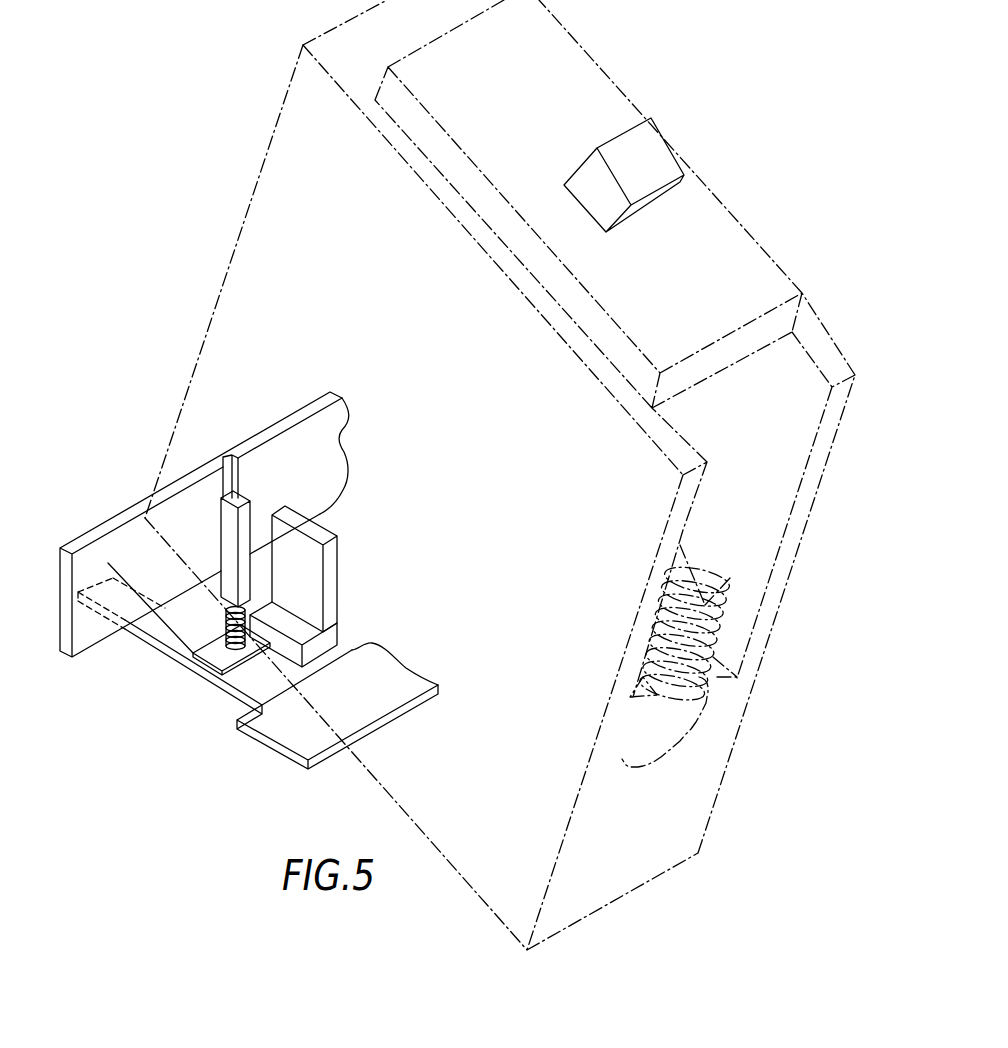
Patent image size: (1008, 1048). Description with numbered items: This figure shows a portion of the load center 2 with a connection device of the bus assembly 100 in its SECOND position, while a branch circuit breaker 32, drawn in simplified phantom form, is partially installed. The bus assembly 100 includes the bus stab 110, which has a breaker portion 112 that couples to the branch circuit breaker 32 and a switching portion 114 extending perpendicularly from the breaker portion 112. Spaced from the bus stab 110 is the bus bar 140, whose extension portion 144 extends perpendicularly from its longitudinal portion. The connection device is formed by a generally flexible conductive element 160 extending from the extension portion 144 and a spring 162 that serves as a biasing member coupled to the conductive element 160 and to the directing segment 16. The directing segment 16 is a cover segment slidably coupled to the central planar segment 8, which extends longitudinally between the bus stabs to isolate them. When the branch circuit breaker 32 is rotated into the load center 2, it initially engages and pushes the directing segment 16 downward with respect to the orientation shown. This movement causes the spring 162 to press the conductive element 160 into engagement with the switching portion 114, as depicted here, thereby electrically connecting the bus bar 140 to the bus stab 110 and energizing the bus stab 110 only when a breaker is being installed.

The load center 2 is at (691, 95).
The branch circuit breaker 32 is at (267, 152).
The planar segment 8 is at (113, 544).
The directing segment 16 is at (247, 506).
The bus assembly 100 is at (410, 443).
The bus stab 110 is at (343, 540).
The breaker portion 112 is at (339, 571).
The switching portion 114 is at (316, 650).
The bus bar 140 is at (288, 732).
The extension portion 144 is at (148, 625).
The conductive element 160 is at (213, 660).
The spring 162 is at (224, 619).